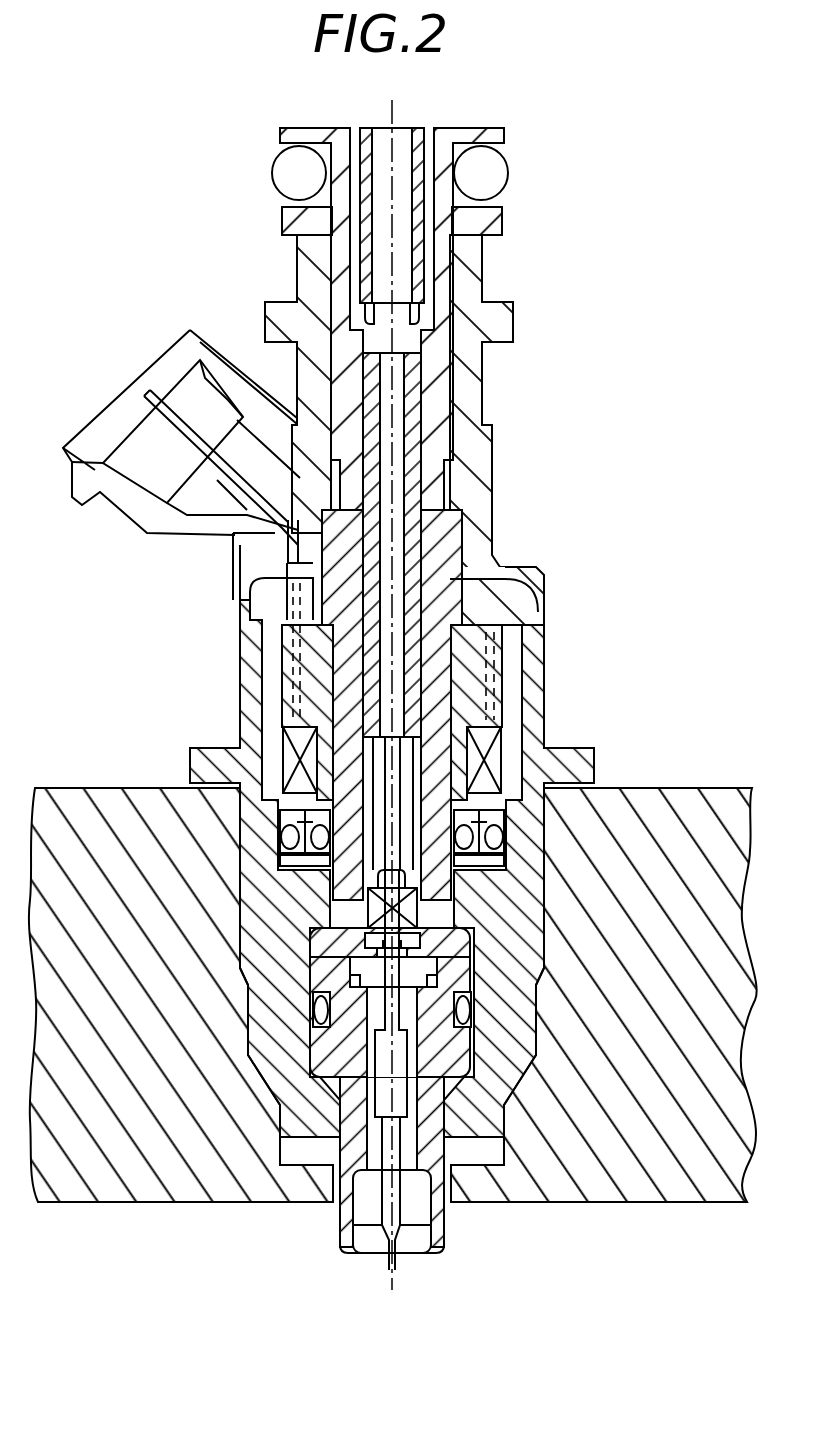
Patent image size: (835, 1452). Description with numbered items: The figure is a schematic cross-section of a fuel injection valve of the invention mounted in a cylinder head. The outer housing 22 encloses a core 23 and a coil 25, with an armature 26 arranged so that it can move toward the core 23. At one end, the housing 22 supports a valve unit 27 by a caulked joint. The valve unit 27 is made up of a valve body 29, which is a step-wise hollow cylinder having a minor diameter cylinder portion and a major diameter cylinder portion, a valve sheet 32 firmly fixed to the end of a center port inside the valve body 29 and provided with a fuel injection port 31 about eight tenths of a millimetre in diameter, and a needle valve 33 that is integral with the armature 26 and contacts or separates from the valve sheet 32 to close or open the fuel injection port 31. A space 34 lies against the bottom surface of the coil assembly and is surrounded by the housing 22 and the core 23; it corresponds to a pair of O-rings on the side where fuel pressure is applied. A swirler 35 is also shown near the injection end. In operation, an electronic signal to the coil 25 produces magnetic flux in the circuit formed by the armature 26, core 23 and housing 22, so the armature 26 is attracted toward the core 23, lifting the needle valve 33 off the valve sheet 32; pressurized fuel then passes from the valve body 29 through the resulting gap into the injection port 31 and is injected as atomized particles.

The housing 22 is at (218, 760).
The core 23 is at (493, 595).
The coil 25 is at (500, 723).
The armature 26 is at (342, 870).
The valve unit 27 is at (313, 990).
The valve body 29 is at (458, 984).
The fuel injection port 31 is at (392, 1270).
The valve sheet 32 is at (363, 1247).
The needle valve 33 is at (400, 1205).
The space 34 is at (464, 842).
The swirler 35 is at (365, 1212).